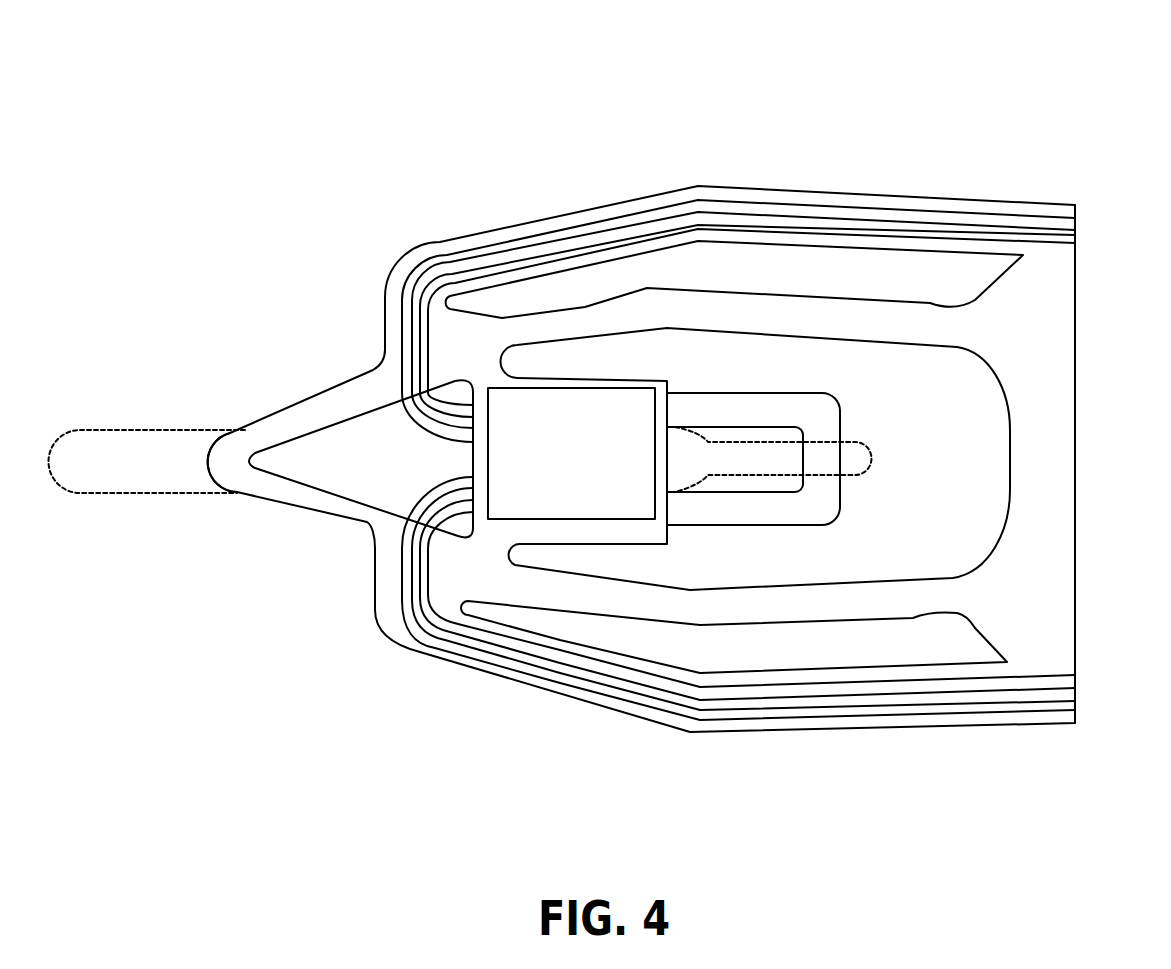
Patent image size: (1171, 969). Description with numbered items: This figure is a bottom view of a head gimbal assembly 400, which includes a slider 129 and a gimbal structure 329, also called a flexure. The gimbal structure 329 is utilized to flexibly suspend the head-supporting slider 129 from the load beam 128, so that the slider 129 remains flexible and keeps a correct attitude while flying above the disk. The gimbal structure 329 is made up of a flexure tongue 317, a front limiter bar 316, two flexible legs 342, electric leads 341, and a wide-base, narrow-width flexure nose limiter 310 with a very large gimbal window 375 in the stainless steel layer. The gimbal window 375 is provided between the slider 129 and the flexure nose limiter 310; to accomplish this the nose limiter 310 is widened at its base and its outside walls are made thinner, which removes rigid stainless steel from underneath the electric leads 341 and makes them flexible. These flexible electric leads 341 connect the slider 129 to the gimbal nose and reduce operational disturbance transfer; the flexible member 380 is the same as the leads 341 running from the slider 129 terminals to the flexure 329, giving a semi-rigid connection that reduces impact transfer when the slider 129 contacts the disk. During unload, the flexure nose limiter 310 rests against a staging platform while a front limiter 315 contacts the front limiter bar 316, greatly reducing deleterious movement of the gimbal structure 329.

The head gimbal assembly 400 is at (621, 34).
The flexure nose limiter 310 is at (335, 505).
The gimbal window 375 is at (283, 458).
The flexible member 380 is at (395, 410).
The electric leads 341 is at (952, 218).
The flexible legs 342 is at (803, 317).
The flexure tongue 317 is at (623, 530).
The slider 129 is at (603, 417).
The front limiter bar 316 is at (772, 405).
The front limiter 315 is at (855, 466).
The load beam 128 is at (177, 482).
The gimbal structure 329 is at (1065, 413).